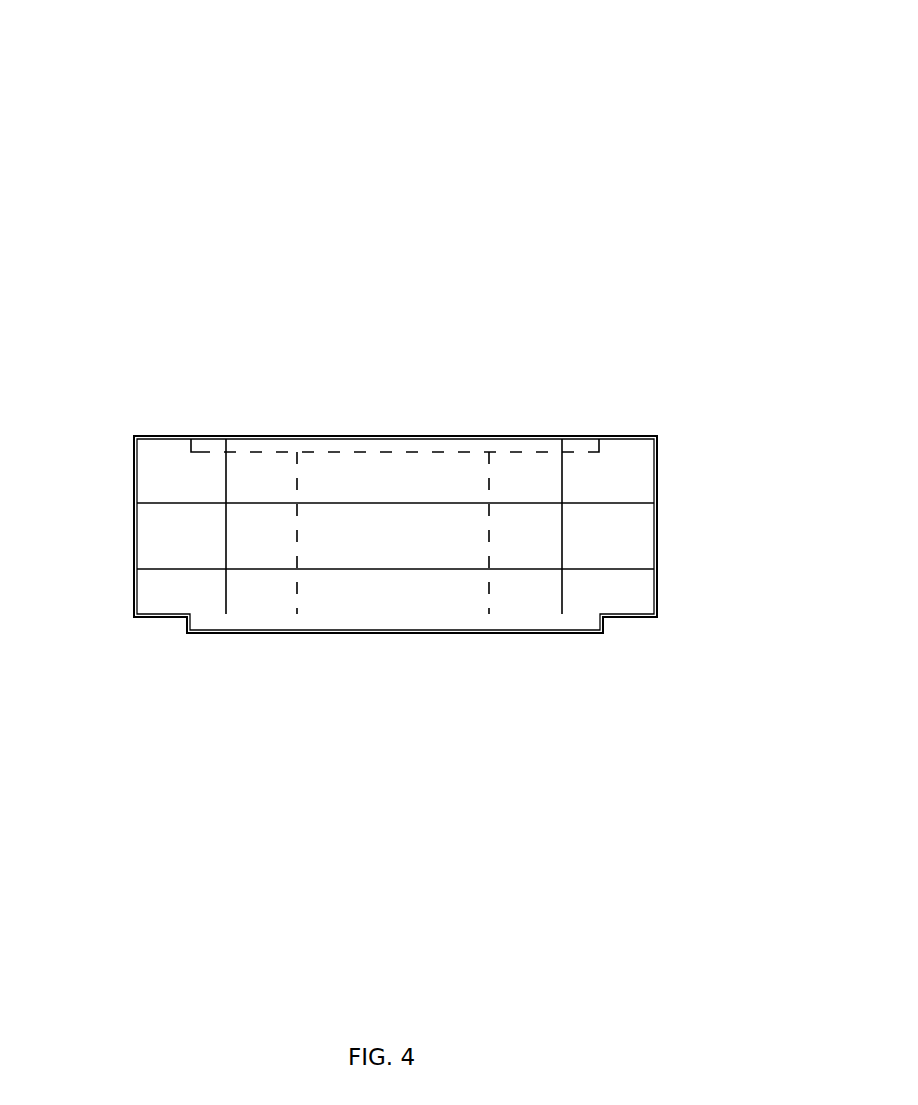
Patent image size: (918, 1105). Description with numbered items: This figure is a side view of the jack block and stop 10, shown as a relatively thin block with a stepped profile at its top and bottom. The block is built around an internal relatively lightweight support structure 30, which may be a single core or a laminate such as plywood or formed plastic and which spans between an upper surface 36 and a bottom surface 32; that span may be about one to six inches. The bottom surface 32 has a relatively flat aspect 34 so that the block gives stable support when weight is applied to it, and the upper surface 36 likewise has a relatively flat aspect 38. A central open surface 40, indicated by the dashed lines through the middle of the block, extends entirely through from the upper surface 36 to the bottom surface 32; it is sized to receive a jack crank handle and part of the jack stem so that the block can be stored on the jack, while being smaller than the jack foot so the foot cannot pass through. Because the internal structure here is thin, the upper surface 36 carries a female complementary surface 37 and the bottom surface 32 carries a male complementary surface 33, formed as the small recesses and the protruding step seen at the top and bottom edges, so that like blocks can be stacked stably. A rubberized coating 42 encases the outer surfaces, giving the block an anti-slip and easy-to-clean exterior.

The jack block and stop 10 is at (220, 163).
The internal support structure 30 is at (618, 500).
The bottom surface 32 is at (645, 636).
The male complementary surface 33 is at (416, 622).
The relatively flat aspect 34 is at (168, 617).
The upper surface 36 is at (639, 425).
The female complementary surface 37 is at (196, 447).
The relatively flat aspect 38 is at (153, 439).
The central open surface 40 is at (489, 459).
The rubberized coating 42 is at (660, 578).